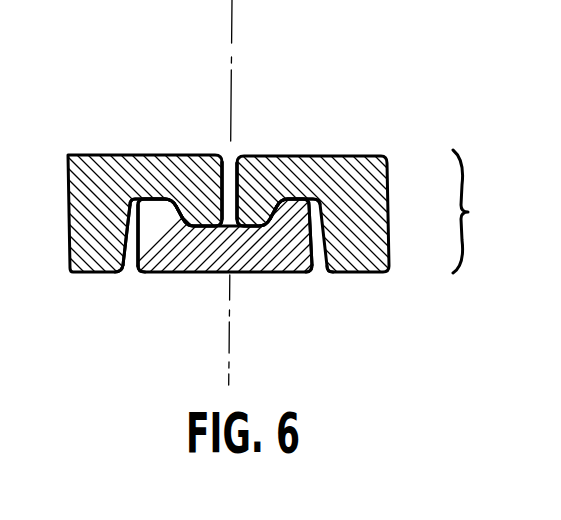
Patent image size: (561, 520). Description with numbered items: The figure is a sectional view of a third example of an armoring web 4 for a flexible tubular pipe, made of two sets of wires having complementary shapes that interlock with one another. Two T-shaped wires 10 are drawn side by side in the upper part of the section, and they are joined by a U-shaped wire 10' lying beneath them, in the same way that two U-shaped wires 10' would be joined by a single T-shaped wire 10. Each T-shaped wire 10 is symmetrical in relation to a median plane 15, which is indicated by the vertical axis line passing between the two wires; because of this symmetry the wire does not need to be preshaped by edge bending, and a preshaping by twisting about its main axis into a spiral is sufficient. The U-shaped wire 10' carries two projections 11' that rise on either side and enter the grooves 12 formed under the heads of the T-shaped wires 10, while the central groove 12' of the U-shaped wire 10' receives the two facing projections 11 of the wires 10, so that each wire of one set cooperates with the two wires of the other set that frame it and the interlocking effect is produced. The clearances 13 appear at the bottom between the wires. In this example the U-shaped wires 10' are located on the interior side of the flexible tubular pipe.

The armoring web 4 is at (475, 211).
The T-shaped wire 10 is at (228, 180).
The U-shaped wire 10' is at (225, 269).
The projection 11 is at (220, 154).
The projection 11' is at (73, 227).
The groove 12 is at (221, 157).
The groove 12' is at (225, 273).
The clearance opening 13 is at (132, 273).
The median plane 15 is at (232, 22).